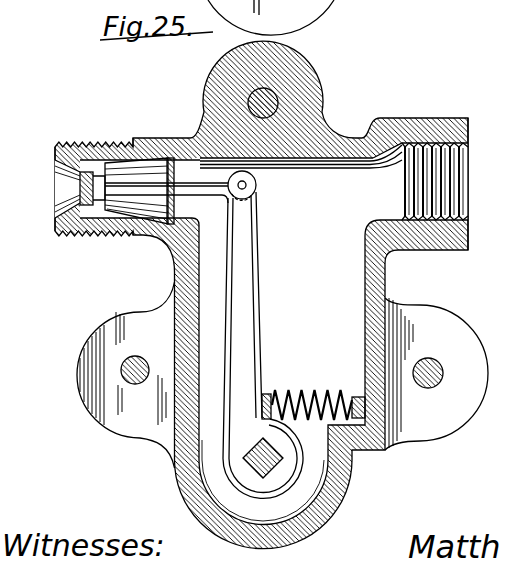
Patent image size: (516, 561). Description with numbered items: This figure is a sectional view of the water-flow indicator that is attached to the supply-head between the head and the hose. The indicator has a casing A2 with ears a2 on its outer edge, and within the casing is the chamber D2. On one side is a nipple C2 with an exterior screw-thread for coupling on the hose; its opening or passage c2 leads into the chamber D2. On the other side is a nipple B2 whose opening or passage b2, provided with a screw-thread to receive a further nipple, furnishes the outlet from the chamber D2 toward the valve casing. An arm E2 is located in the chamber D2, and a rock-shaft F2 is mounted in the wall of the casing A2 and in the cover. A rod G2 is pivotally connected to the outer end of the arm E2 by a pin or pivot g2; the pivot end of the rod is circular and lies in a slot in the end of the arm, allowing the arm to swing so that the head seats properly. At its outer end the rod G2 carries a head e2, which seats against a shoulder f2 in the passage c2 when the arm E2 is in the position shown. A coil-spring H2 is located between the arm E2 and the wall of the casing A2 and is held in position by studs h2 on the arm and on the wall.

The casing A2 is at (150, 300).
The ears a2 is at (297, 60).
The nipple B2 is at (404, 114).
The opening or passage b2 is at (398, 165).
The nipple C2 is at (78, 150).
The opening or passage c2 is at (67, 185).
The chamber D2 is at (330, 297).
The head e2 is at (103, 200).
The arm E2 is at (263, 307).
The shoulder f2 is at (97, 148).
The rock-shaft F2 is at (255, 462).
The rod G2 is at (200, 194).
The pin or pivot g2 is at (260, 200).
The coil-spring H2 is at (330, 378).
The studs h2 is at (268, 395).